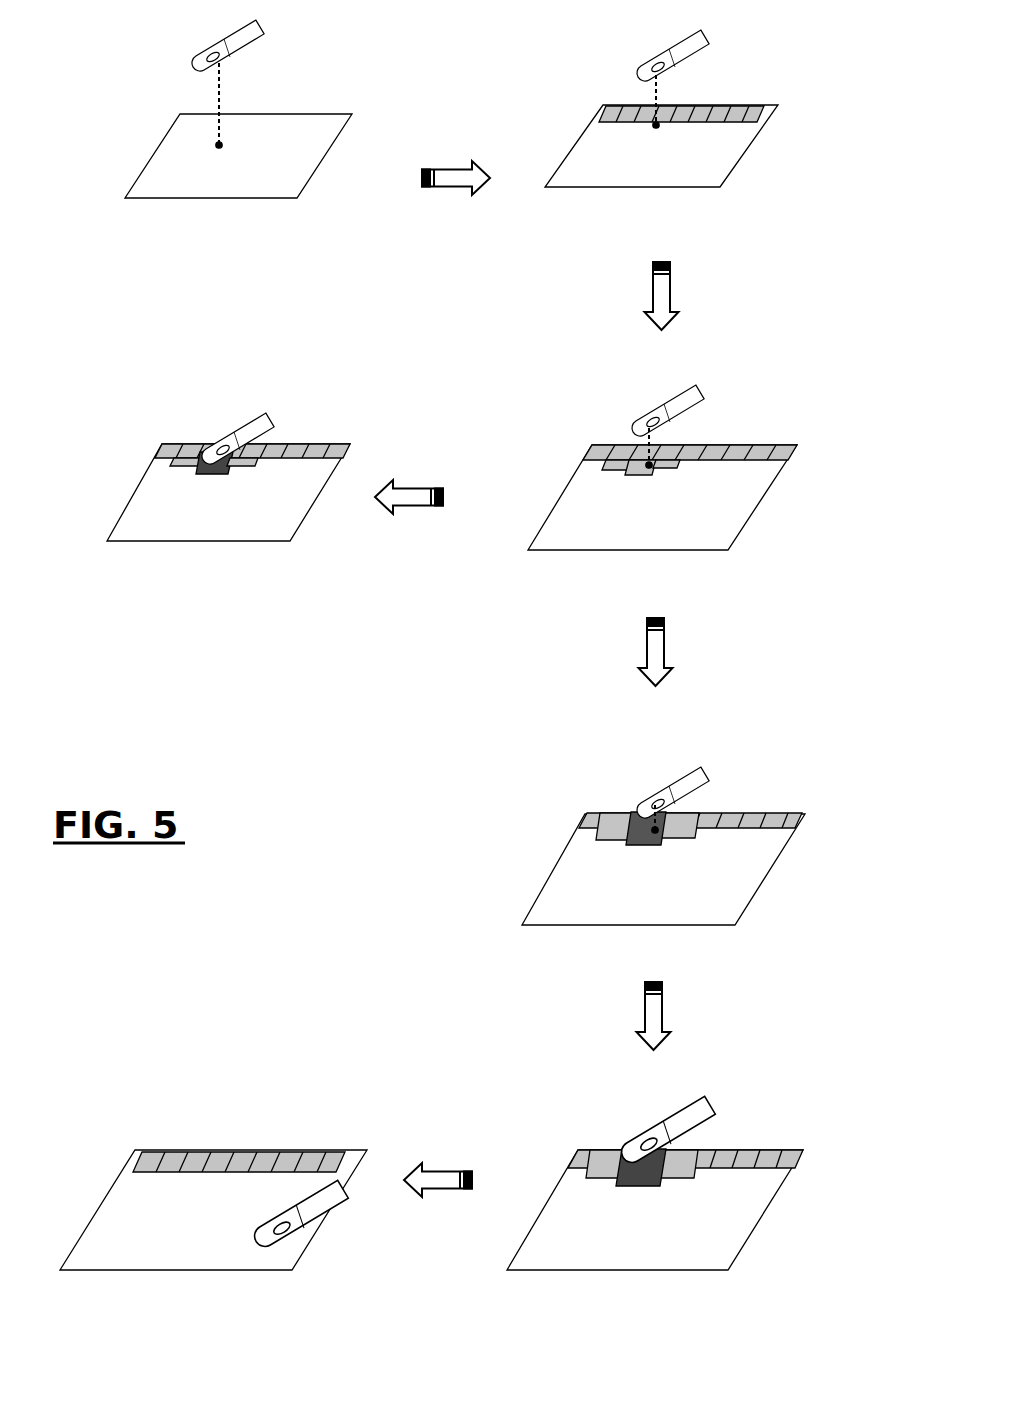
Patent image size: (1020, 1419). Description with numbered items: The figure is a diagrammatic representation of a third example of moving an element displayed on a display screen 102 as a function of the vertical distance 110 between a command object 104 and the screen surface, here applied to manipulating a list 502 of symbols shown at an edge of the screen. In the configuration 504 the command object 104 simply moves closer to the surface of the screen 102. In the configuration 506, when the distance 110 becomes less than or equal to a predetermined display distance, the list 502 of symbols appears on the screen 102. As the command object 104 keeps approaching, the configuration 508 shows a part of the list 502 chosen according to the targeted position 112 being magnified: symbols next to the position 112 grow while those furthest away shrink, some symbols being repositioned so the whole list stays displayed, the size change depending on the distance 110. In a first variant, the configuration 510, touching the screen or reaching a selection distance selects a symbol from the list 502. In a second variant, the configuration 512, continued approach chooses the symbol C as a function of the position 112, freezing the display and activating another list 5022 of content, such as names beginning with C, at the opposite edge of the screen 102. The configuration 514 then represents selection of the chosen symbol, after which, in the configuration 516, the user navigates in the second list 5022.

The display screen 102 is at (162, 144).
The command object 104 is at (250, 36).
The vertical distance 110 is at (221, 88).
The targeted position 112 is at (216, 148).
The list of symbols 502 is at (596, 129).
The second list 5022 is at (57, 1232).
The configuration 504 is at (116, 79).
The configuration 506 is at (526, 74).
The configuration 508 is at (538, 383).
The configuration 510 is at (129, 394).
The configuration 512 is at (477, 774).
The configuration 514 is at (549, 1112).
The configuration 516 is at (99, 1107).